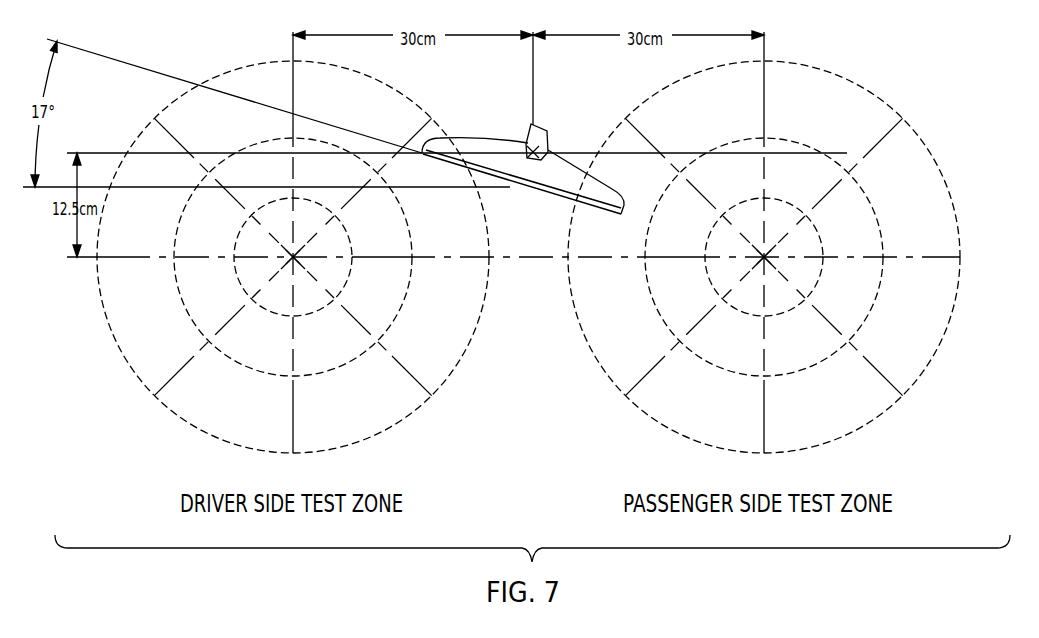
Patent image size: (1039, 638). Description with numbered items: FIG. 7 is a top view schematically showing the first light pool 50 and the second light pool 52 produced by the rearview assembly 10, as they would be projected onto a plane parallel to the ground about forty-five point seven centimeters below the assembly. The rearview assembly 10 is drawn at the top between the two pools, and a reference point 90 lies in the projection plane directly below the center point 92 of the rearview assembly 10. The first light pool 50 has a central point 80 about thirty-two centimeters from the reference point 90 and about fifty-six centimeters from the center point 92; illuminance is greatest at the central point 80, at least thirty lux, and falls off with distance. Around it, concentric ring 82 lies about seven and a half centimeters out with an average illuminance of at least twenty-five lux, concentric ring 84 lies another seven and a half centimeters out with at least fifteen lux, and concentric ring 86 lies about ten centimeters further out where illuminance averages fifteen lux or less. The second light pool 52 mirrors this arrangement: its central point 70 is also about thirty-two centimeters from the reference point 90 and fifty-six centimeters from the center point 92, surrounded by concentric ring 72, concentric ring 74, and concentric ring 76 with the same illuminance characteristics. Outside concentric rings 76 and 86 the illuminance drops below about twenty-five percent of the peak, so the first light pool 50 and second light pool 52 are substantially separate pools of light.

The rearview assembly 10 is at (502, 130).
The first light pool 50 is at (909, 58).
The second light pool 52 is at (164, 60).
The central point 70 is at (280, 258).
The concentric ring 72 is at (240, 287).
The concentric ring 74 is at (202, 335).
The concentric ring 76 is at (167, 410).
The central point 80 is at (764, 257).
The concentric ring 82 is at (825, 270).
The concentric ring 84 is at (875, 307).
The concentric ring 86 is at (930, 368).
The reference point 90 is at (551, 151).
The center point 92 is at (524, 154).